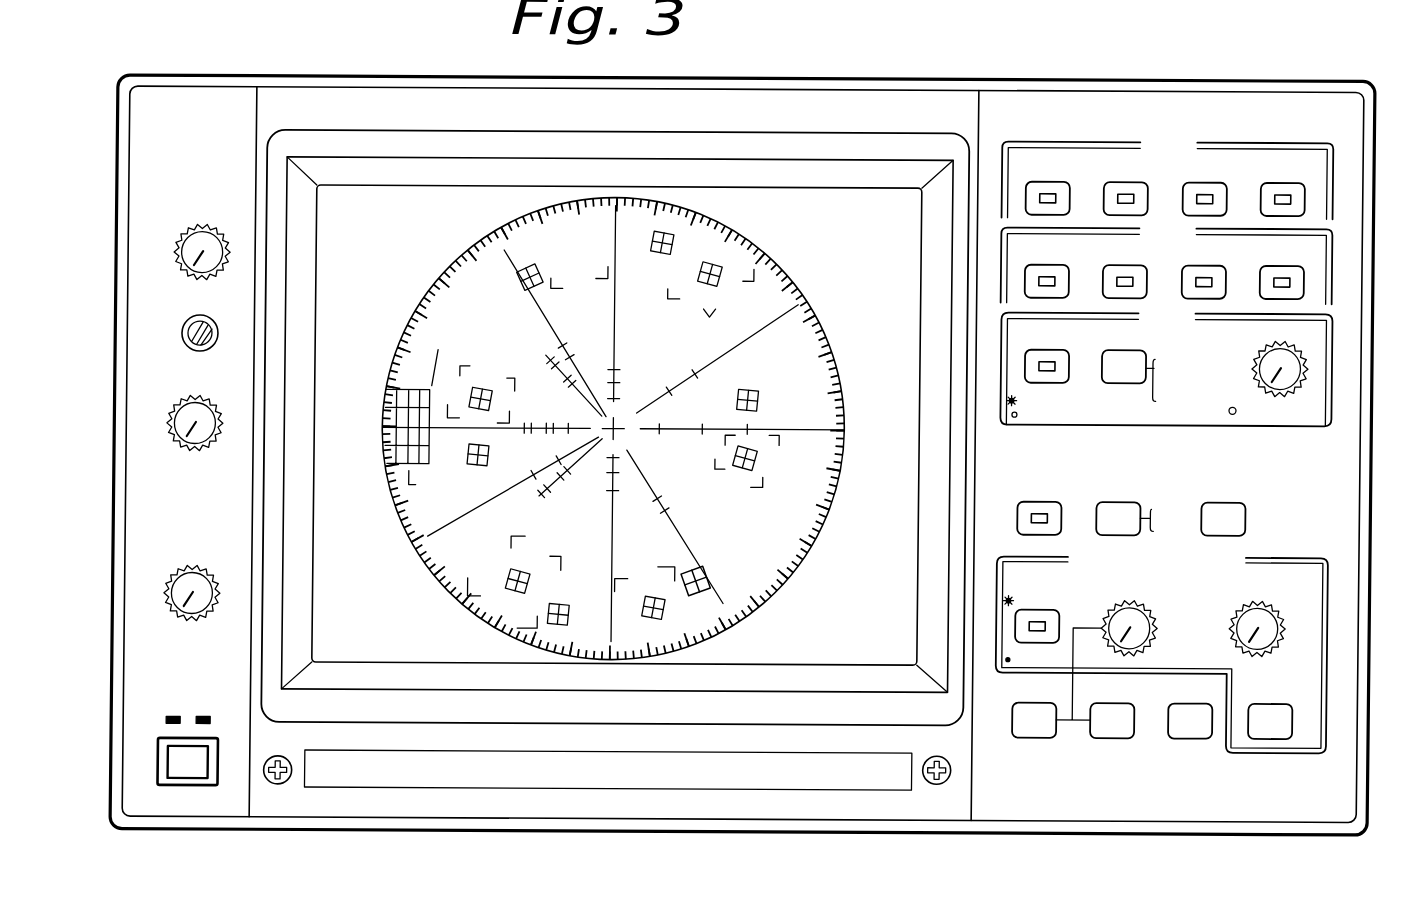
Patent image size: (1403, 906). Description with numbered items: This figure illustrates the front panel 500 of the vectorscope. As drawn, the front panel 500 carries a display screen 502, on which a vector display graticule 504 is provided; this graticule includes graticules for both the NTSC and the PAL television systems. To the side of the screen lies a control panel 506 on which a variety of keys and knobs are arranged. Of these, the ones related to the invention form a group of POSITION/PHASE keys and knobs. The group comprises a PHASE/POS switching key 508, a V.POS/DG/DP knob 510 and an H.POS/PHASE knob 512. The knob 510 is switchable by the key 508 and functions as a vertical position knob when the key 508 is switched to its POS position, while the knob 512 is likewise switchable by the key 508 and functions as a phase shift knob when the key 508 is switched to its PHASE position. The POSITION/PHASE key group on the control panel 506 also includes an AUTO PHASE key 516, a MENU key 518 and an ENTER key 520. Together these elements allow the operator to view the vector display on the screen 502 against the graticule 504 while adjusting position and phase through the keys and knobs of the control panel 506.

The front panel 500 is at (378, 68).
The display screen 502 is at (837, 210).
The vector display graticule 504 is at (460, 243).
The control panel 506 is at (1088, 114).
The PHASE/POS switching key 508 is at (1018, 627).
The V.POS/DG/DP knob 510 is at (1142, 653).
The H.POS/PHASE knob 512 is at (1289, 626).
The AUTO PHASE key 516 is at (1248, 512).
The MENU key 518 is at (1040, 740).
The ENTER key 520 is at (1117, 740).